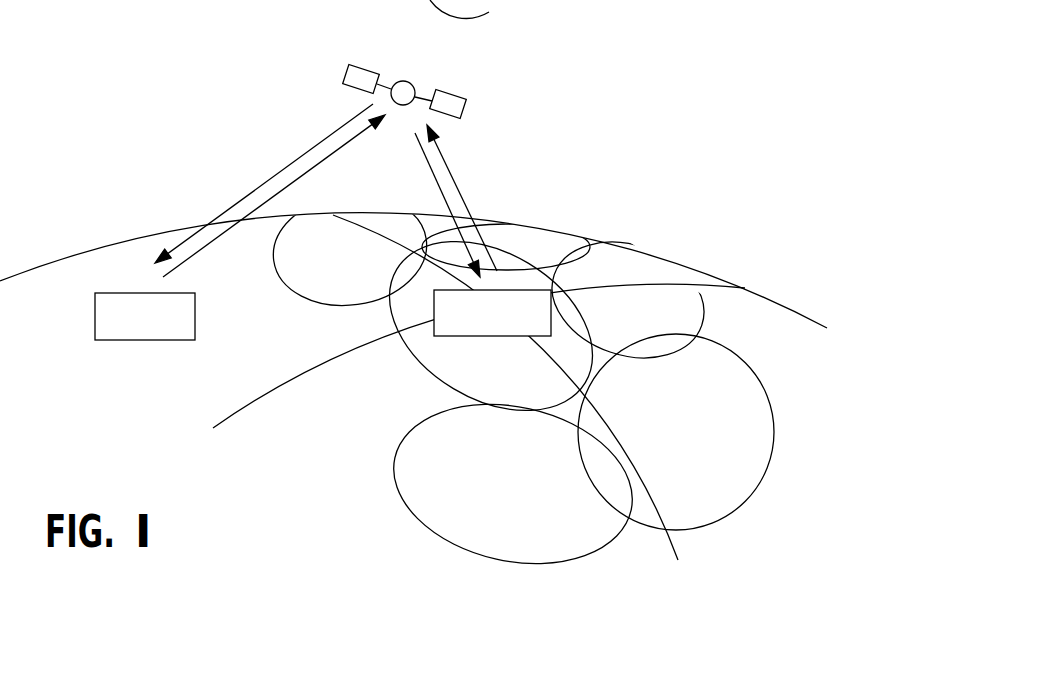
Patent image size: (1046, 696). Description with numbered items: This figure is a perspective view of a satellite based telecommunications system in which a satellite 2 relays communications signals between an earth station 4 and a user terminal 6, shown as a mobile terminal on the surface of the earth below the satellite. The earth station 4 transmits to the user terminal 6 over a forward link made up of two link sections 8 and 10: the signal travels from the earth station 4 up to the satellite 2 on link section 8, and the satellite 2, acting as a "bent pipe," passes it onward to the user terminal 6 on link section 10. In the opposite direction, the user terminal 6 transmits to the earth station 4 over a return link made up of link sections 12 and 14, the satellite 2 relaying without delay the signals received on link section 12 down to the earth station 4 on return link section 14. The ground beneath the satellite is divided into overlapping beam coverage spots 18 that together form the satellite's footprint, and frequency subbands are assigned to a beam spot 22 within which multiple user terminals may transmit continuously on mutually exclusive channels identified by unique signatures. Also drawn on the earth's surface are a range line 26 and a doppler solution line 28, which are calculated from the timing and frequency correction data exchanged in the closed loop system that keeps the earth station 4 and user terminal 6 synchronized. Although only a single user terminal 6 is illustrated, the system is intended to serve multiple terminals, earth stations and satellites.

The satellite 2 is at (354, 41).
The earth station 4 is at (107, 293).
The user terminal 6 is at (497, 337).
The forward link section 8 is at (303, 175).
The forward link section 10 is at (436, 181).
The return link section 12 is at (457, 183).
The return link section 14 is at (293, 152).
The beam coverage spot 18 is at (408, 478).
The beam spot 22 is at (413, 350).
The range line 26 is at (680, 546).
The doppler solution line 28 is at (660, 287).